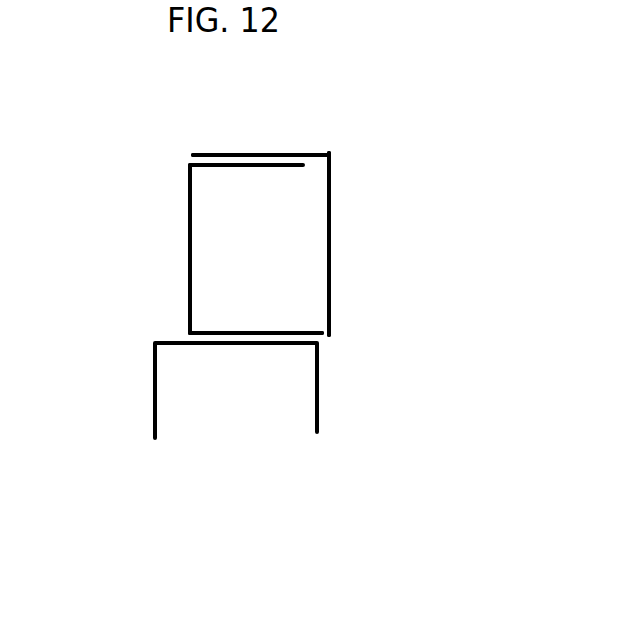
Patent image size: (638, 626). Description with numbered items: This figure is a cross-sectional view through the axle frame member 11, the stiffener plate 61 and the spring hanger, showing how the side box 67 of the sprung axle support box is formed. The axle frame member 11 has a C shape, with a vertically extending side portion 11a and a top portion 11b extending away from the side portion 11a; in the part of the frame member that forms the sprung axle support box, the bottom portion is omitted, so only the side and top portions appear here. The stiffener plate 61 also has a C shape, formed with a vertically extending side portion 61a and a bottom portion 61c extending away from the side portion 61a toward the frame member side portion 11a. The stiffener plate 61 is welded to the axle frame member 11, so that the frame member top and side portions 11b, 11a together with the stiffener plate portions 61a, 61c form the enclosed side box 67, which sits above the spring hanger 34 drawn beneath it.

The axle frame member 11 is at (334, 175).
The side portion 11a is at (329, 268).
The top portion 11b is at (265, 155).
The stiffener plate 61 is at (178, 223).
The side portion 61a is at (190, 263).
The bottom portion 61c is at (248, 333).
The side box 67 is at (250, 263).
The base member 34 is at (150, 402).